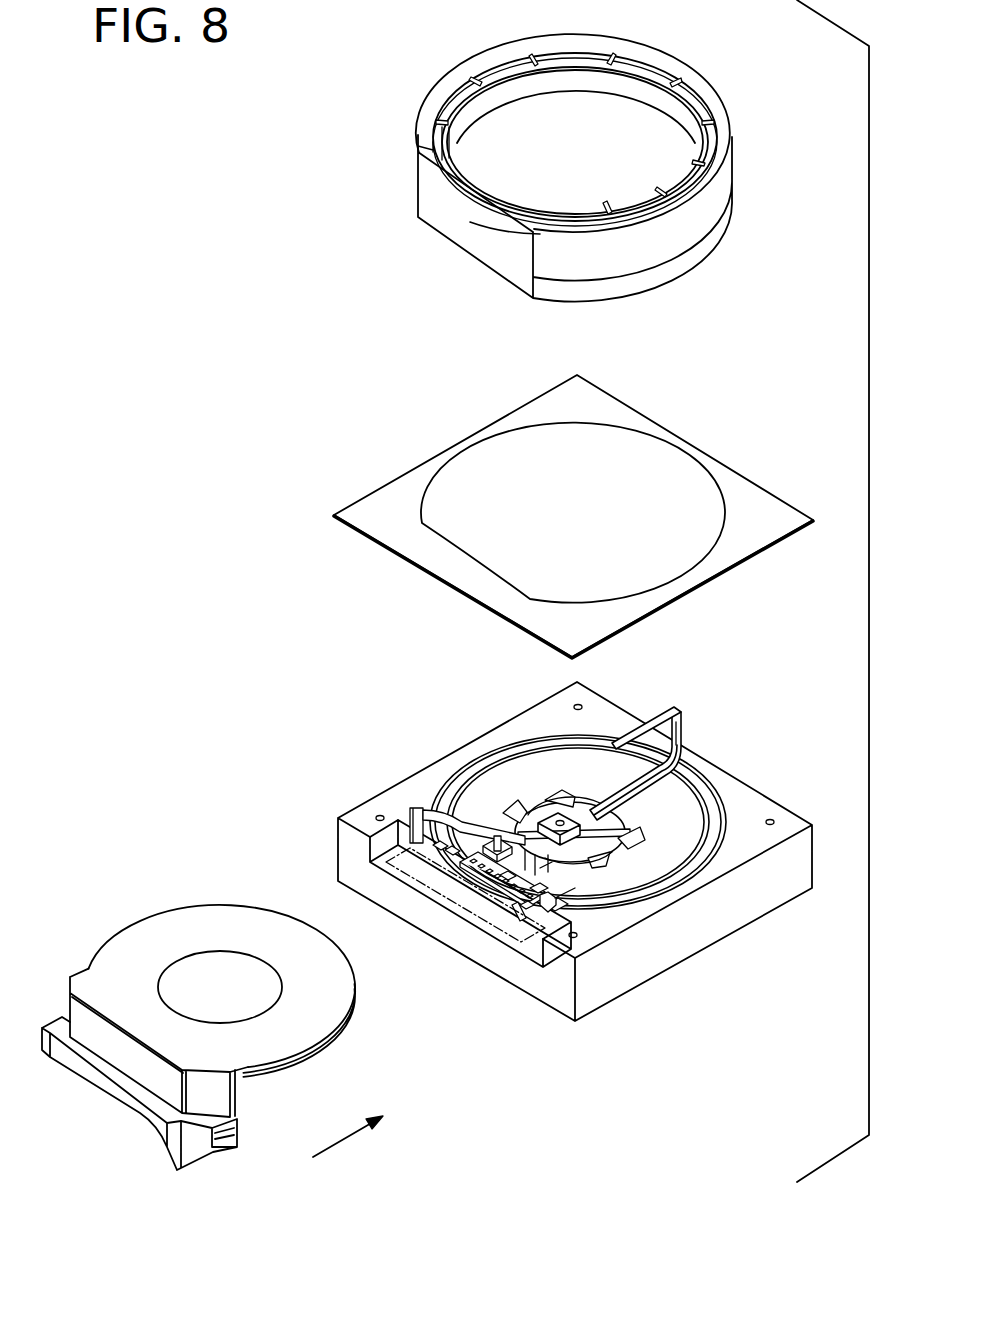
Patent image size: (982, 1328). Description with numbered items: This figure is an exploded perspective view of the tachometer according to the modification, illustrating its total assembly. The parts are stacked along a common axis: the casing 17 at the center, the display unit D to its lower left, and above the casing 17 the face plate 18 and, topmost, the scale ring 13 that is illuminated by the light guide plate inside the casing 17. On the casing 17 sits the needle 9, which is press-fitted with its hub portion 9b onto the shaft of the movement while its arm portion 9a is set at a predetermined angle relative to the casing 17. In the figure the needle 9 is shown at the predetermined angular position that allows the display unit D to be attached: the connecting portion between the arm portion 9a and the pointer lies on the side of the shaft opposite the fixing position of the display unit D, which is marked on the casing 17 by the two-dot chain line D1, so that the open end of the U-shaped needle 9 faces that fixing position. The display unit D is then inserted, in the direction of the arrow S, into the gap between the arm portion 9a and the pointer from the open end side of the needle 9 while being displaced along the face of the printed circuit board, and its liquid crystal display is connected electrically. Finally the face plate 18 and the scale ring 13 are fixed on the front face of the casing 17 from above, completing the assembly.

The scale ring 13 is at (423, 112).
The face plate 18 is at (381, 488).
The casing 17 is at (379, 790).
The needle 9 is at (691, 738).
The arm portion 9a is at (655, 712).
The hub portion 9b is at (657, 820).
The display unit D is at (176, 906).
The two-dot chain line D1 is at (500, 935).
The insertion direction S is at (348, 1145).